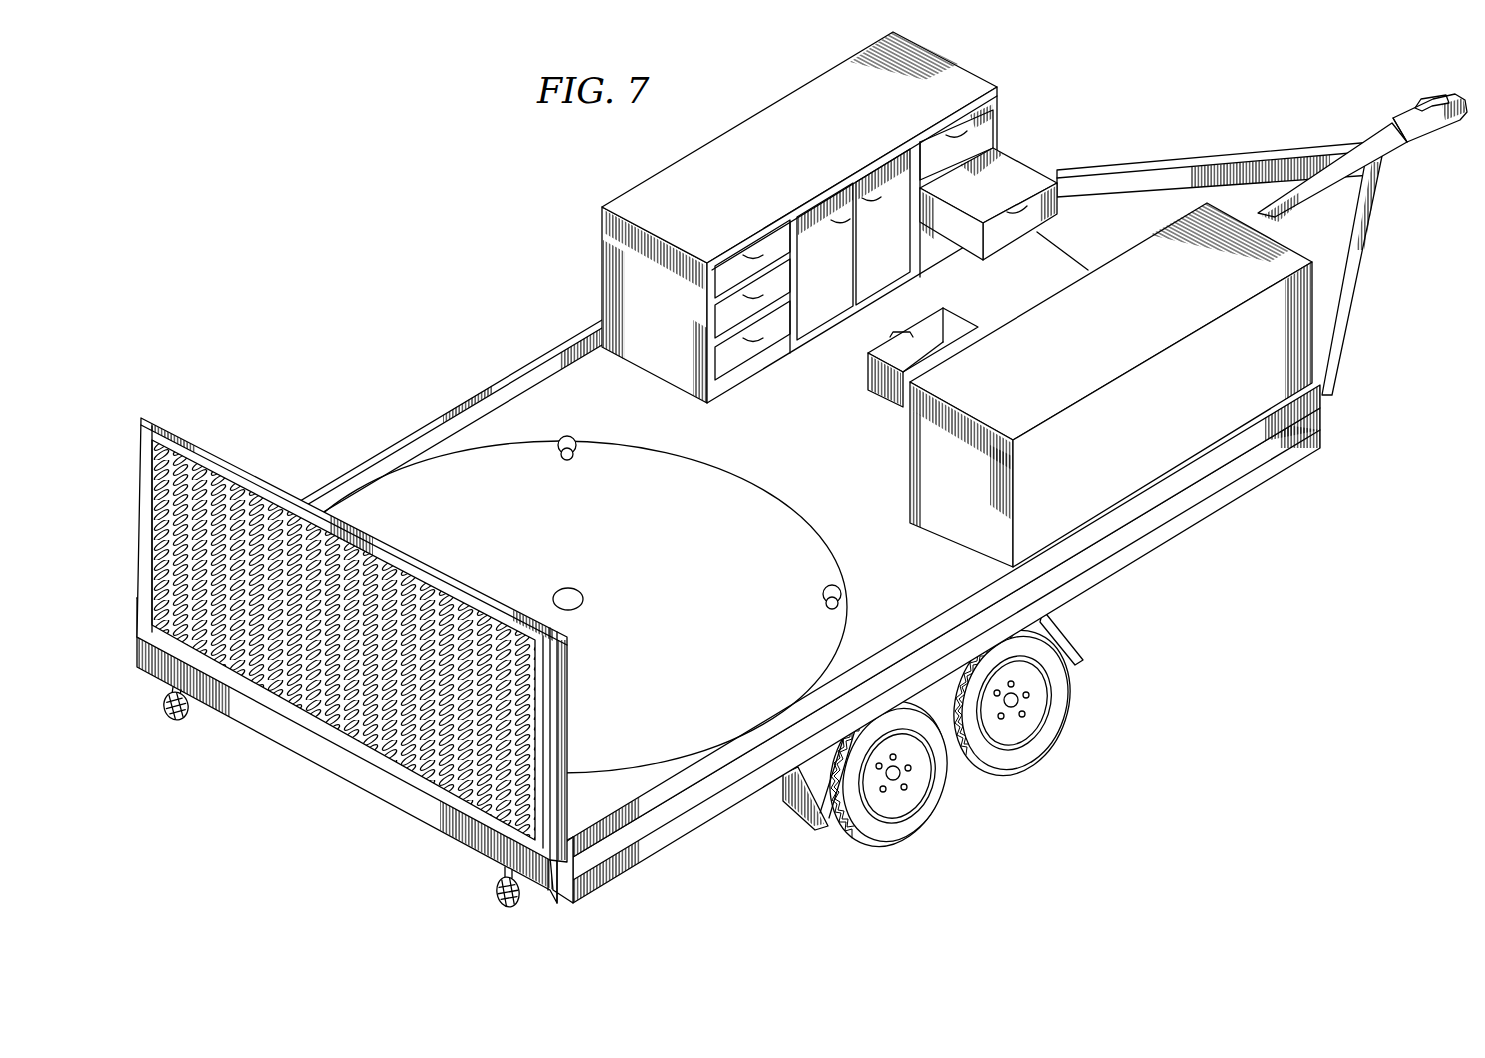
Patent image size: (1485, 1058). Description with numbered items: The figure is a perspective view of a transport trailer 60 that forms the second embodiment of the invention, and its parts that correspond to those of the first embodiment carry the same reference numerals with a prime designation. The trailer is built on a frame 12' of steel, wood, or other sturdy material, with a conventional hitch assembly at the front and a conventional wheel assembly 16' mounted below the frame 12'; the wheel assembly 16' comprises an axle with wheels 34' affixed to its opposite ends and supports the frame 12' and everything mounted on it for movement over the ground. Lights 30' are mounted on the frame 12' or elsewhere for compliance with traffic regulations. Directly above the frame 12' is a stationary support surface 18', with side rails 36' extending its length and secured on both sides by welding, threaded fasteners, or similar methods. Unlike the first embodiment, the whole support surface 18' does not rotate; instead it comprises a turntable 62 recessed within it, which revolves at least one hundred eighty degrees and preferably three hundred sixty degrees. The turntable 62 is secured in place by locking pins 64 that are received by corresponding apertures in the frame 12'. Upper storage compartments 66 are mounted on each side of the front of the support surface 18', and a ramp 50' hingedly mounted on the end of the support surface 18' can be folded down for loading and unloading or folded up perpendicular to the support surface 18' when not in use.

The transport trailer 60 is at (424, 284).
The ramp 50' is at (352, 629).
The locking pin 64 is at (568, 437).
The turntable 62 is at (694, 618).
The support surface 18' is at (730, 544).
The upper storage compartment 66 is at (813, 158).
The side rail 36' is at (946, 655).
The frame 12' is at (643, 740).
The wheel assembly 16' is at (905, 729).
The wheel 34' is at (950, 738).
The light 30' is at (335, 798).